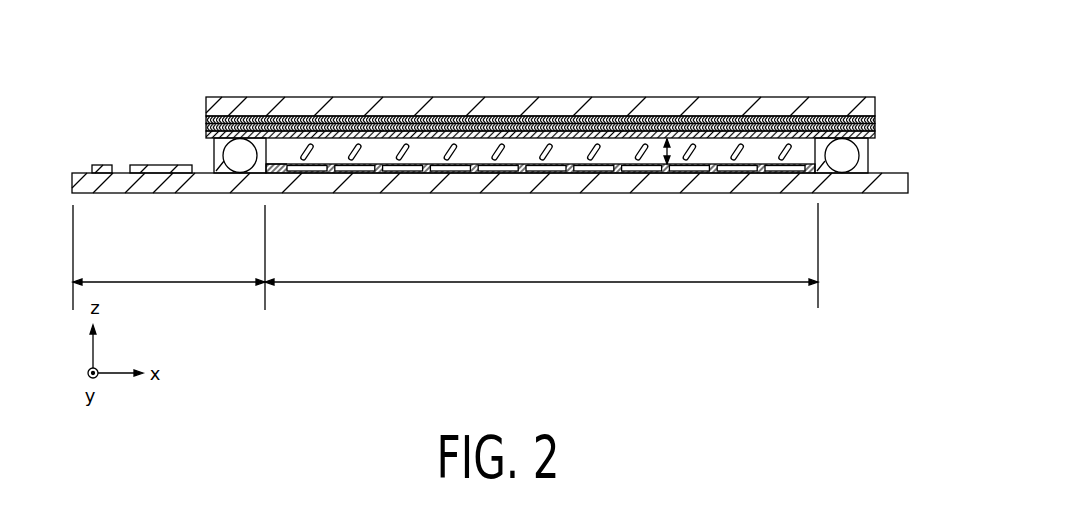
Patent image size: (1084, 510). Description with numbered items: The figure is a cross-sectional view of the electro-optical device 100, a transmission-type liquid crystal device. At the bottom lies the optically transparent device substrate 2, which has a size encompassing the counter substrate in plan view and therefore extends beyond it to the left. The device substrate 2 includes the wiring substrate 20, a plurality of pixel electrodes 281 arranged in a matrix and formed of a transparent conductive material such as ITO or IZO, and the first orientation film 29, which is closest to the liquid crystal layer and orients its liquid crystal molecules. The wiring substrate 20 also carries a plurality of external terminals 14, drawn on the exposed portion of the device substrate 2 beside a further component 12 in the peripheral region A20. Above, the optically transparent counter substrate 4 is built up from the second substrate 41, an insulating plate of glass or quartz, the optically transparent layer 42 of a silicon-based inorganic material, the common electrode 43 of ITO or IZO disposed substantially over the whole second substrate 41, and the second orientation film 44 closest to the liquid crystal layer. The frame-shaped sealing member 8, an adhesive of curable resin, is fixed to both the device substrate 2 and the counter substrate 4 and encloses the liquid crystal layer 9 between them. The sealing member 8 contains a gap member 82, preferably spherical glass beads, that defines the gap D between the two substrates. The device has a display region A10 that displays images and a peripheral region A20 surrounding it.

The electro-optical device 100 is at (882, 52).
The counter substrate 4 is at (824, 86).
The second substrate 41 is at (273, 104).
The optically transparent layer 42 is at (318, 120).
The common electrode 43 is at (366, 128).
The second orientation film 44 is at (409, 134).
The liquid crystal layer 9 is at (795, 108).
The sealing member 8 is at (873, 138).
The gap member 82 is at (852, 158).
The device substrate 2 is at (866, 203).
The external terminal 14 is at (100, 176).
The driver circuit 12 is at (157, 176).
The first orientation film 29 is at (283, 174).
The wiring substrate 20 is at (389, 174).
The pixel electrode 281 is at (490, 174).
The gap D is at (668, 139).
The display region A10 is at (541, 256).
The peripheral region A20 is at (169, 257).